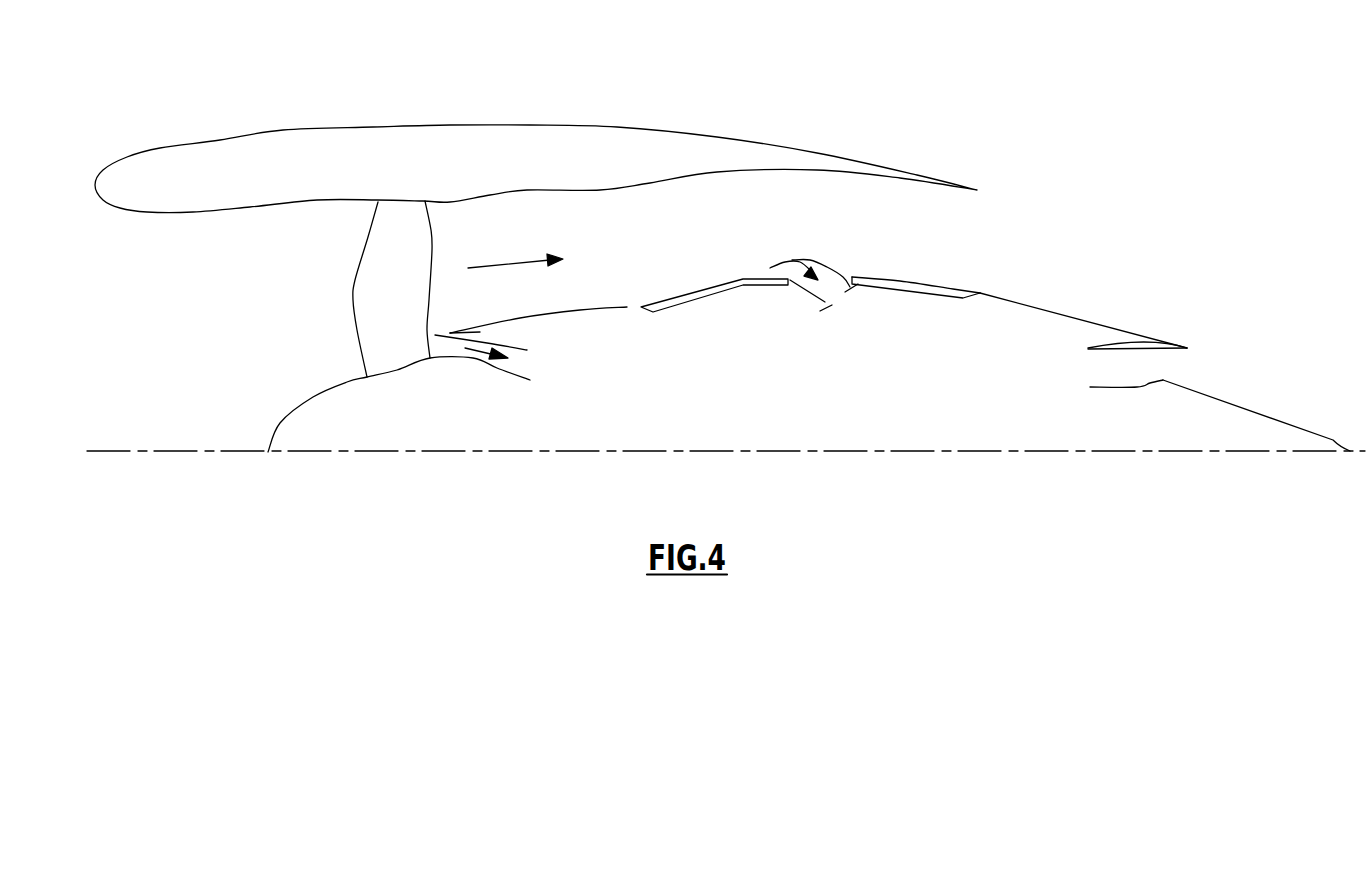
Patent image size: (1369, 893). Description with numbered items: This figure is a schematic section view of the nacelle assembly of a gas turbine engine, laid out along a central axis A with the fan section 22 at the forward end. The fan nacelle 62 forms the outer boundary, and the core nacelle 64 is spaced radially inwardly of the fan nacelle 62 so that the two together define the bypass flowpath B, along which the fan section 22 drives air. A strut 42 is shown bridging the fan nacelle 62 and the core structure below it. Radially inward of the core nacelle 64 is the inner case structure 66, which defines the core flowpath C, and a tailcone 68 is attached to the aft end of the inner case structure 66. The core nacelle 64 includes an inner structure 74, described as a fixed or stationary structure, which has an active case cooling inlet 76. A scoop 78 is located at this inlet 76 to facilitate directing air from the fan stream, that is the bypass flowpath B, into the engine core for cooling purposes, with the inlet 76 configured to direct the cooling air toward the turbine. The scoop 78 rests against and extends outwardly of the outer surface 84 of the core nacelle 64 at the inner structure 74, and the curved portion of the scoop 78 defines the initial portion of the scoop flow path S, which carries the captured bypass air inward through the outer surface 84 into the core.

The fan section 22 is at (520, 221).
The fan nacelle 62 is at (373, 127).
The strut 42 is at (411, 262).
The core nacelle 64 is at (1047, 307).
The inner case structure 66 is at (1105, 387).
The tailcone 68 is at (1268, 433).
The inner structure 74 is at (698, 295).
The active case cooling inlet 76 is at (840, 298).
The scoop 78 is at (828, 260).
The outer surface 84 is at (747, 280).
The scoop flow path S is at (778, 265).
The engine central axis A is at (182, 452).
The bypass flowpath B is at (497, 263).
The core flowpath C is at (465, 348).